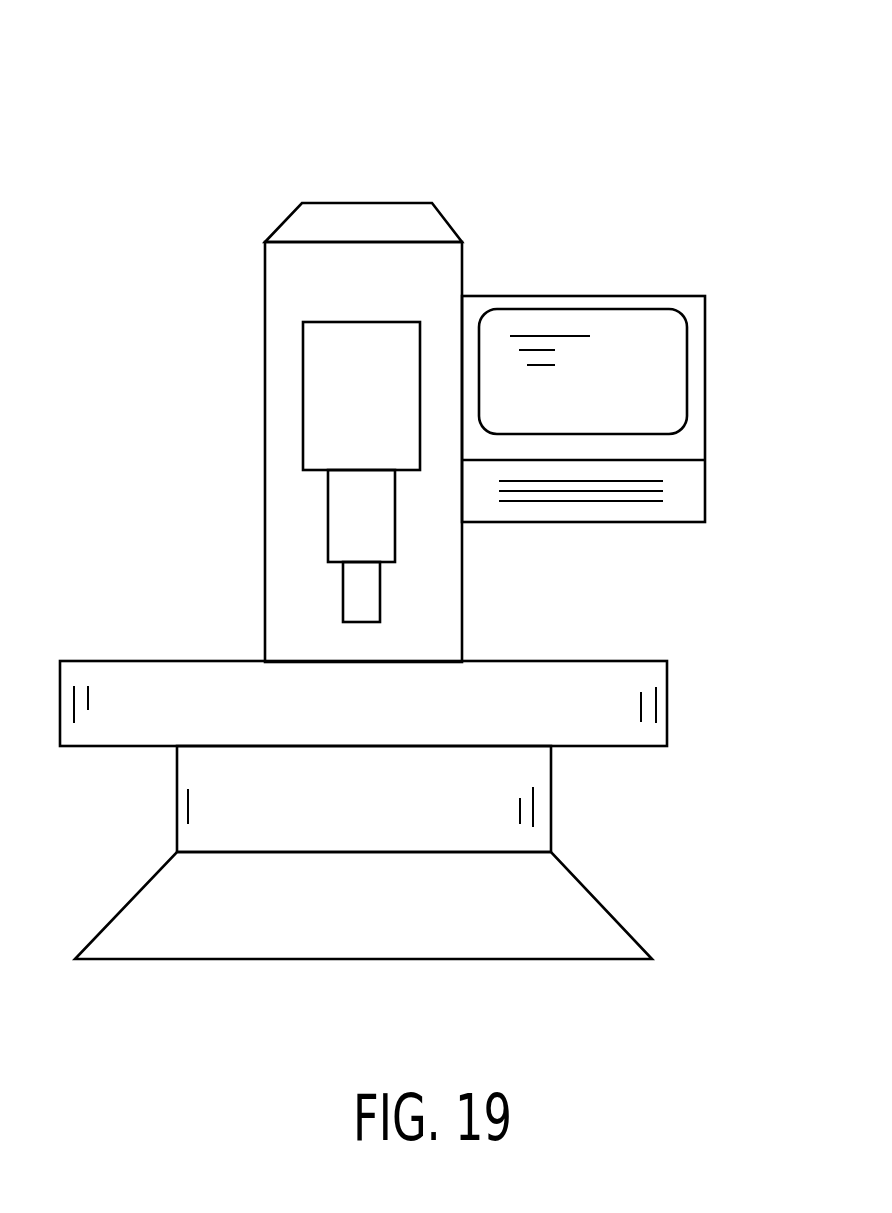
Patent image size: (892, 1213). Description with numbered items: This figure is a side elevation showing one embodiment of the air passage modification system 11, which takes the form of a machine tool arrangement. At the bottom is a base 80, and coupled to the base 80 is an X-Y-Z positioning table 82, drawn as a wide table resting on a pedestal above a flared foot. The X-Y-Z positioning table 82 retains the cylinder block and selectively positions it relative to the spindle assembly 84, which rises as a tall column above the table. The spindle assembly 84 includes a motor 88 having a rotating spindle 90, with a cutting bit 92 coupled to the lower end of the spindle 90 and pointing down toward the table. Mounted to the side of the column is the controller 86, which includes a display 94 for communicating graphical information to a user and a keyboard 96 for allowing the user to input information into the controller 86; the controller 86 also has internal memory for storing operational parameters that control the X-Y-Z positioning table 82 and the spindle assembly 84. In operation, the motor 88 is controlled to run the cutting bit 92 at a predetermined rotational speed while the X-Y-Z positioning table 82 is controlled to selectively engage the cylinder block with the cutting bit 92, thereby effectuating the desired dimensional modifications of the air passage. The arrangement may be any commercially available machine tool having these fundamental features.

The air passage modification system 11 is at (468, 491).
The base 80 is at (419, 852).
The X-Y-Z positioning table 82 is at (461, 691).
The spindle assembly 84 is at (287, 432).
The controller 86 is at (669, 399).
The motor 88 is at (289, 414).
The spindle 90 is at (276, 542).
The cutting bit 92 is at (463, 607).
The display 94 is at (655, 381).
The keyboard 96 is at (683, 520).